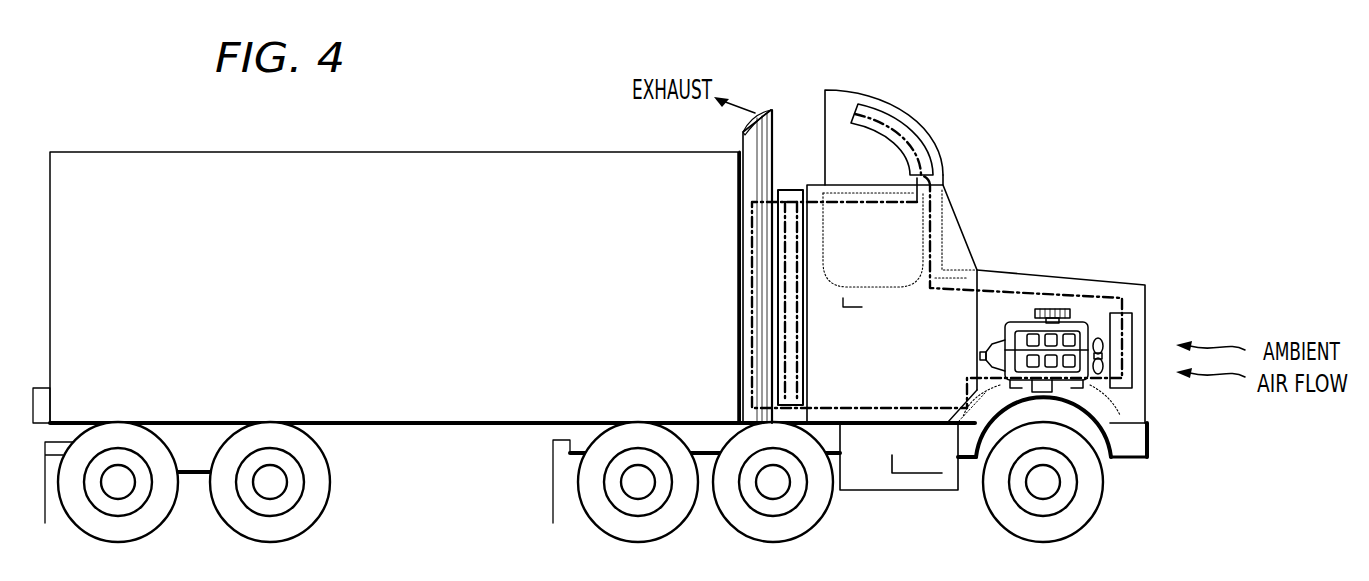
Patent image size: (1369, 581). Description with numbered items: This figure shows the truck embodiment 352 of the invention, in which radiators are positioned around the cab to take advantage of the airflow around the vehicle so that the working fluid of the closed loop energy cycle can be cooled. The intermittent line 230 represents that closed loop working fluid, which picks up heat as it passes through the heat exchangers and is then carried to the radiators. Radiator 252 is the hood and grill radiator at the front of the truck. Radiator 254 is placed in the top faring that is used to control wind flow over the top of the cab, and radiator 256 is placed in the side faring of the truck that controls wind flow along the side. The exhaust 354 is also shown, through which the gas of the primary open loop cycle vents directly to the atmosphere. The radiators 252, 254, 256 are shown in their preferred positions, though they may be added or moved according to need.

The exhaust 354 is at (770, 110).
The radiator 256 is at (795, 190).
The radiator 254 is at (915, 142).
The truck embodiment 352 is at (1044, 273).
The radiator 252 is at (1128, 333).
The intermittent line 230 is at (909, 406).